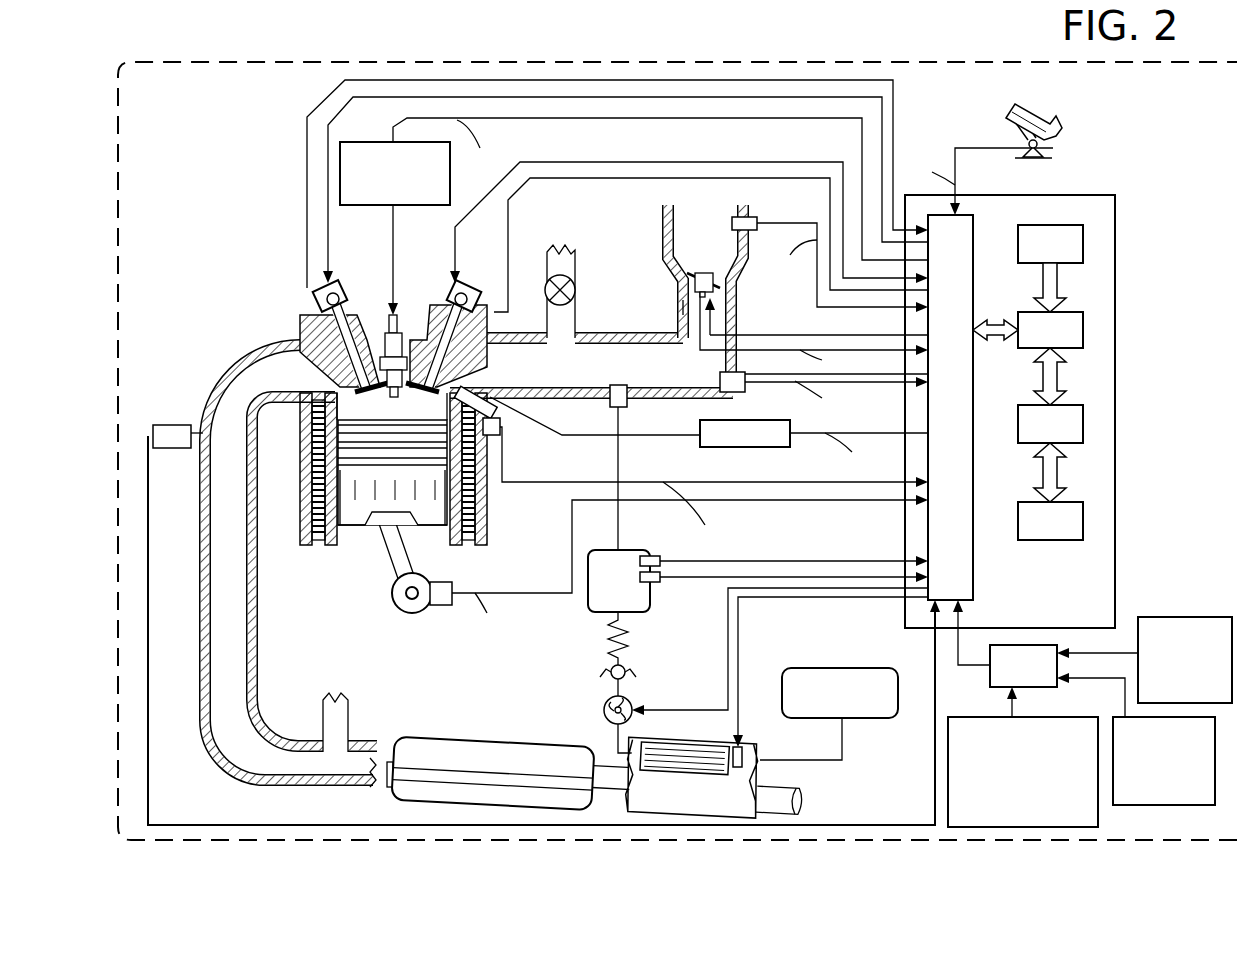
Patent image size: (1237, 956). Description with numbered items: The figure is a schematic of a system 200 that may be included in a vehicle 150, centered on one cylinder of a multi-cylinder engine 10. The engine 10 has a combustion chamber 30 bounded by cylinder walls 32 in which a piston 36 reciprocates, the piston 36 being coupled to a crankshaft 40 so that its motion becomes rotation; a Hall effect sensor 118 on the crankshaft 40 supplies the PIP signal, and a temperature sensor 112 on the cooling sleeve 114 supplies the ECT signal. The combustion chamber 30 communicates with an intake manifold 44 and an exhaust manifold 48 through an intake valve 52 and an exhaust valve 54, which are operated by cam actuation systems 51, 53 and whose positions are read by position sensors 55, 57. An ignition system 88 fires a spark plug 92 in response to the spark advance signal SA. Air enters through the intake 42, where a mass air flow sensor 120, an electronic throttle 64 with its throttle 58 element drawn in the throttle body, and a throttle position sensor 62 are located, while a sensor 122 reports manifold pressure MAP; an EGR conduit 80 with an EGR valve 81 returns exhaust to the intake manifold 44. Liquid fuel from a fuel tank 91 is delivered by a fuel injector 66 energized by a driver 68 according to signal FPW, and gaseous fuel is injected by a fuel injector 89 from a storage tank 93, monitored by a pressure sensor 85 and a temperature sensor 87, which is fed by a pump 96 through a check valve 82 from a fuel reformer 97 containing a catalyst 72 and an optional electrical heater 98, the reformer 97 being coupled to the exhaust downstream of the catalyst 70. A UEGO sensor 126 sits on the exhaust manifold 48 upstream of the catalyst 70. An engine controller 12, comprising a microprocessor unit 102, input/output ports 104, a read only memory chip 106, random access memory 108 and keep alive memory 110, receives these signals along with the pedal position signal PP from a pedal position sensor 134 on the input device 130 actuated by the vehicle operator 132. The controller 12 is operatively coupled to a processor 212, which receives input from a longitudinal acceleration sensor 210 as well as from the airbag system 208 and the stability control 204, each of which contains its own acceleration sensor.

The vehicle 150 is at (200, 58).
The system 200 is at (212, 130).
The engine 10 is at (351, 416).
The UEGO sensor 126 is at (158, 425).
The exhaust manifold 48 is at (291, 562).
The intake manifold 44 is at (591, 365).
The intake 42 is at (705, 290).
The cylinder walls 32 is at (340, 532).
The cooling sleeve 114 is at (478, 500).
The combustion chamber 30 is at (393, 407).
The exhaust valve 54 is at (350, 382).
The position sensor 57 is at (317, 292).
The cam actuation system 53 is at (337, 286).
The intake valve 52 is at (440, 372).
The position sensor 55 is at (466, 302).
The cam actuation system 51 is at (450, 285).
The ignition system 88 is at (353, 142).
The spark plug 92 is at (396, 314).
The piston 36 is at (378, 500).
The crankshaft 40 is at (397, 605).
The Hall effect sensor 118 is at (440, 605).
The EGR conduit 80 is at (548, 268).
The EGR valve 81 is at (575, 300).
The throttle position sensor 62 is at (722, 280).
The electronic throttle 64 is at (693, 283).
The throttle 58 is at (681, 302).
The mass air flow sensor 120 is at (757, 218).
The manifold pressure sensor 122 is at (745, 390).
The fuel injector 89 is at (612, 407).
The fuel injector 66 is at (492, 400).
The driver 68 is at (720, 447).
The temperature sensor 112 is at (500, 430).
The storage tank 93 is at (588, 605).
The pressure sensor 85 is at (648, 556).
The temperature sensor 87 is at (662, 580).
The check valve 82 is at (630, 670).
The pump 96 is at (604, 710).
The catalyst 70 is at (412, 738).
The catalyst 72 is at (683, 740).
The electrical heater 98 is at (742, 747).
The fuel reformer 97 is at (758, 760).
The fuel tank 91 is at (850, 668).
The engine controller 12 is at (1037, 397).
The input/output ports 104 is at (973, 225).
The read only memory chip 106 is at (1083, 242).
The microprocessor unit 102 is at (1083, 325).
The random access memory 108 is at (1083, 425).
The keep alive memory 110 is at (1083, 518).
The input device 130 is at (1015, 152).
The vehicle operator 132 is at (1062, 105).
The pedal position sensor 134 is at (1040, 148).
The processor 212 is at (1005, 643).
The airbag system 208 is at (1144, 660).
The longitudinal acceleration sensor 210 is at (1023, 757).
The stability control 204 is at (1136, 739).